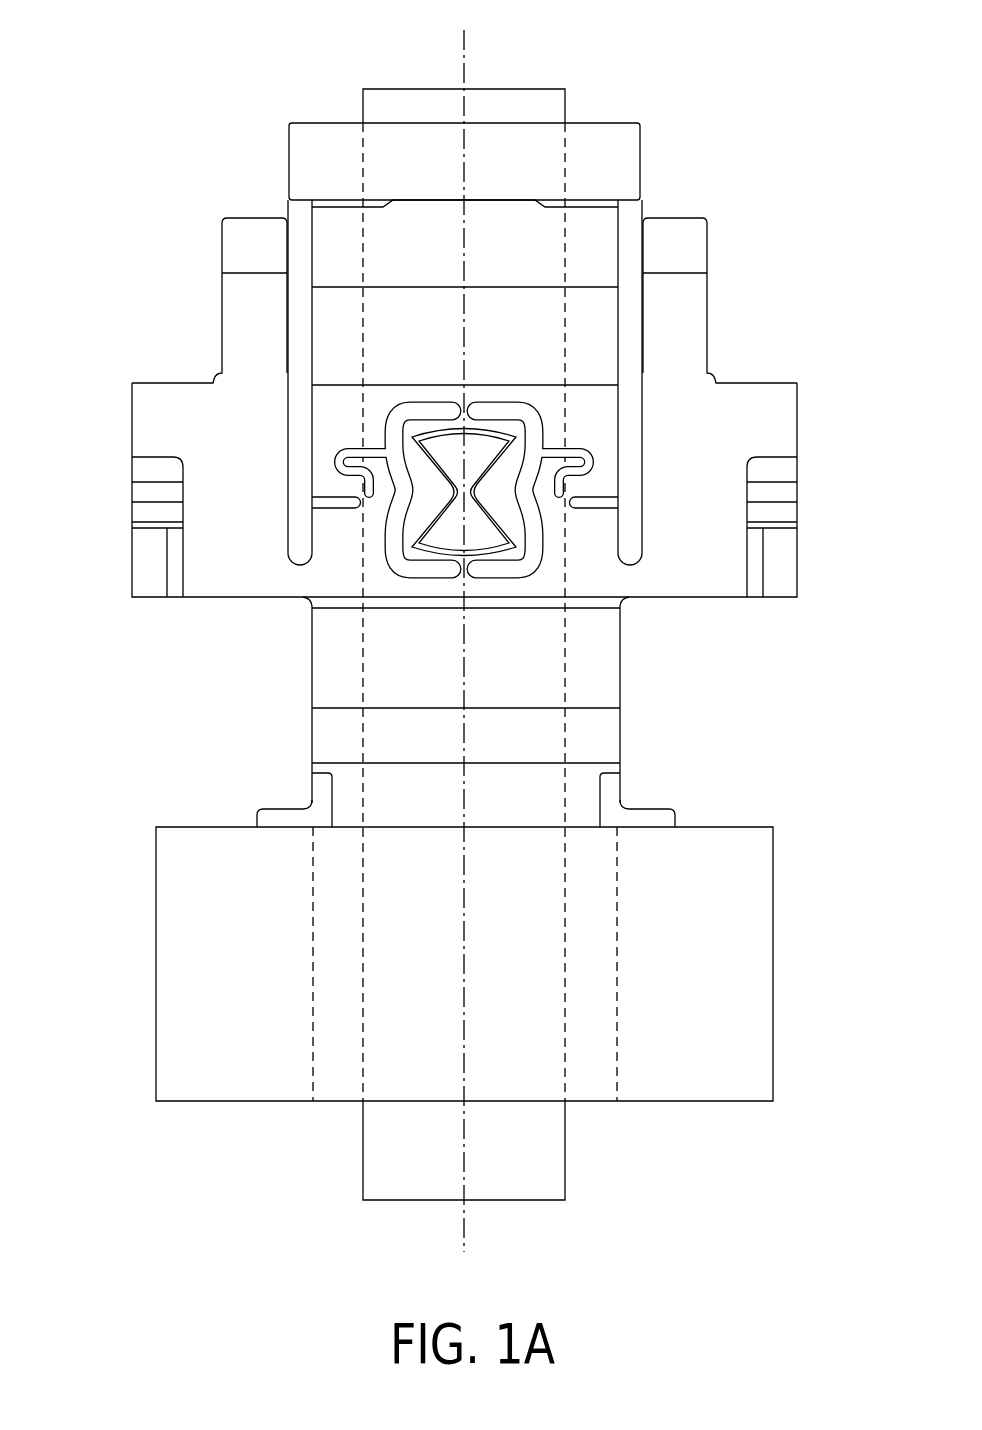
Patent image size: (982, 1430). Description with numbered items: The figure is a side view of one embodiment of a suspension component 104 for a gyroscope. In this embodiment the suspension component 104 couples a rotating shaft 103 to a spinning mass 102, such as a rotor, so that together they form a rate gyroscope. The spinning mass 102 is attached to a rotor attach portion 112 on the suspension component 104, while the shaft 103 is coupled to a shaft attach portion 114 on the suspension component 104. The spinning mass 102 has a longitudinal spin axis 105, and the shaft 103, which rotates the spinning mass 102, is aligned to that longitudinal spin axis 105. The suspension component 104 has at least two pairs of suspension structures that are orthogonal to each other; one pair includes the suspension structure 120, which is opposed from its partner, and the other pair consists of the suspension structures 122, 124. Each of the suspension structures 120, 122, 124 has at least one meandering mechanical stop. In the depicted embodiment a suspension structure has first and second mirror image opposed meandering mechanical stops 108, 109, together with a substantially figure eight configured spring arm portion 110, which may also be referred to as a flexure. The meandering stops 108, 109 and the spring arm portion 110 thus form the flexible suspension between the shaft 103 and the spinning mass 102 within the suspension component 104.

The spinning mass 102 is at (155, 962).
The rotating shaft 103 is at (362, 107).
The suspension component 104 is at (202, 622).
The longitudinal spin axis 105 is at (466, 60).
The first meandering mechanical stop 108 is at (346, 441).
The second meandering mechanical stop 109 is at (595, 448).
The spring arm portion 110 is at (507, 472).
The rotor attach portion 112 is at (652, 808).
The shaft attach portion 114 is at (641, 155).
The suspension structure 120 is at (350, 546).
The suspension structure 122 is at (820, 458).
The suspension structure 124 is at (122, 413).